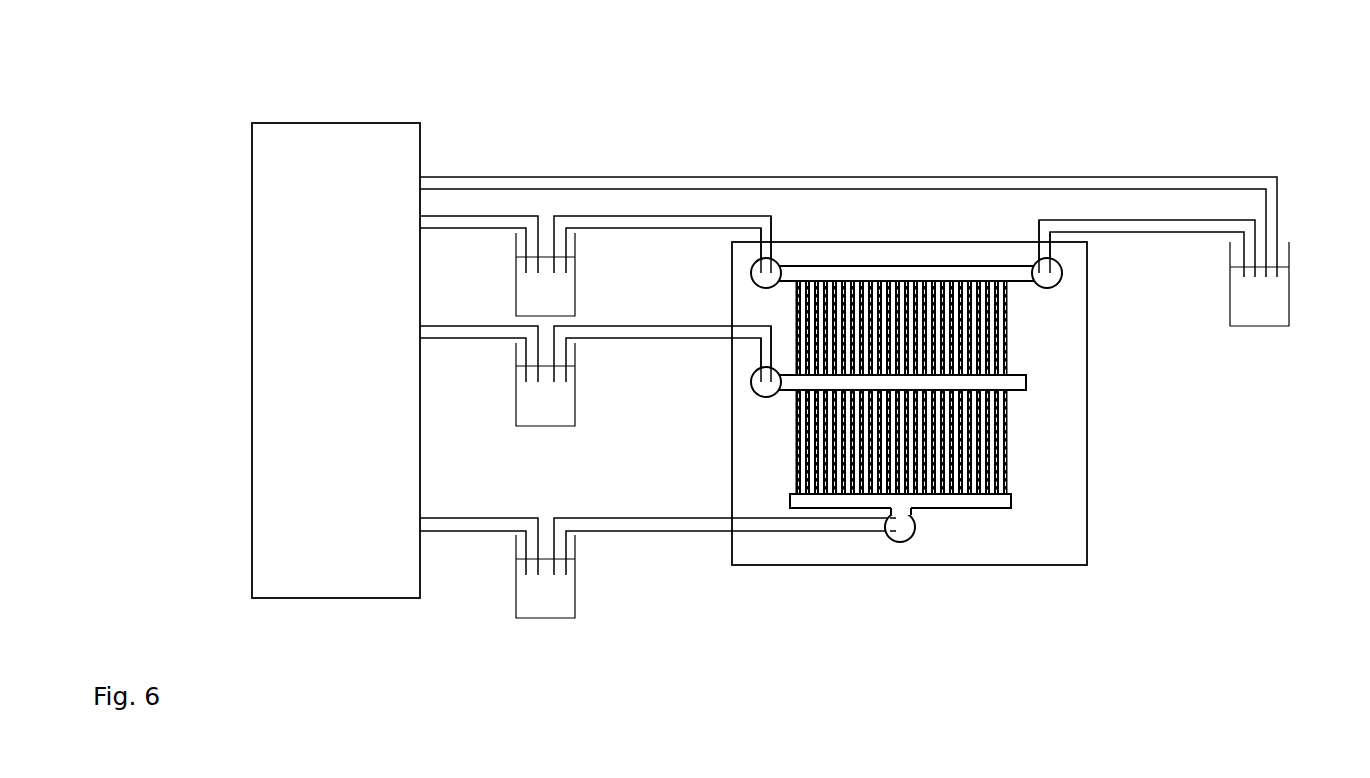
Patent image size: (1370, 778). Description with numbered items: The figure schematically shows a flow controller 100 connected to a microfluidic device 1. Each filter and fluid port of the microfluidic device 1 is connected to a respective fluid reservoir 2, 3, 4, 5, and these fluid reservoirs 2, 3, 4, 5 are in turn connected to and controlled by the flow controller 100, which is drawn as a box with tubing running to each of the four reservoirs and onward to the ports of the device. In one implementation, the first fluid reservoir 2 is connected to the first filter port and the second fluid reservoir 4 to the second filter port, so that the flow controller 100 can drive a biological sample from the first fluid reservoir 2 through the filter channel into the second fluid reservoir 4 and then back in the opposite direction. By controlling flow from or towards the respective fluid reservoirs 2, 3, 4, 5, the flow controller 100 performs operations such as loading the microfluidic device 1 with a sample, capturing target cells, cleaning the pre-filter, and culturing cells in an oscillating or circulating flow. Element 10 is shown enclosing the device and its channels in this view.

The microfluidic device 1 is at (182, 103).
The flow controller 100 is at (250, 353).
The first fluid reservoir 2 is at (576, 288).
The fluid reservoir 3 is at (576, 398).
The second fluid reservoir 4 is at (1291, 300).
The fluid reservoir 5 is at (576, 591).
The microfluidic device 10 is at (1089, 424).